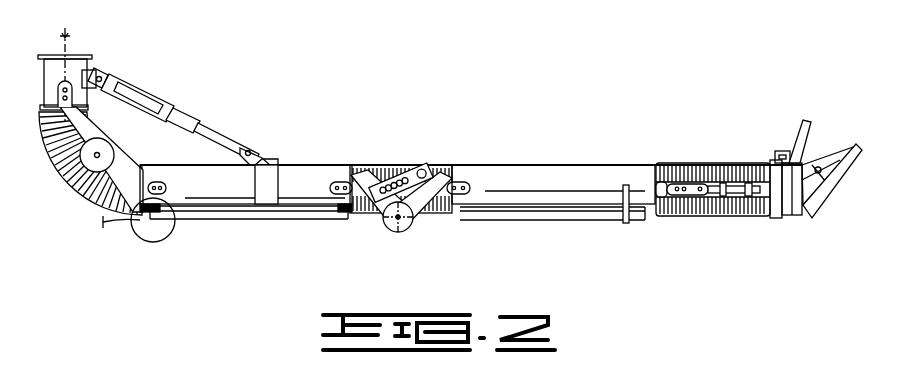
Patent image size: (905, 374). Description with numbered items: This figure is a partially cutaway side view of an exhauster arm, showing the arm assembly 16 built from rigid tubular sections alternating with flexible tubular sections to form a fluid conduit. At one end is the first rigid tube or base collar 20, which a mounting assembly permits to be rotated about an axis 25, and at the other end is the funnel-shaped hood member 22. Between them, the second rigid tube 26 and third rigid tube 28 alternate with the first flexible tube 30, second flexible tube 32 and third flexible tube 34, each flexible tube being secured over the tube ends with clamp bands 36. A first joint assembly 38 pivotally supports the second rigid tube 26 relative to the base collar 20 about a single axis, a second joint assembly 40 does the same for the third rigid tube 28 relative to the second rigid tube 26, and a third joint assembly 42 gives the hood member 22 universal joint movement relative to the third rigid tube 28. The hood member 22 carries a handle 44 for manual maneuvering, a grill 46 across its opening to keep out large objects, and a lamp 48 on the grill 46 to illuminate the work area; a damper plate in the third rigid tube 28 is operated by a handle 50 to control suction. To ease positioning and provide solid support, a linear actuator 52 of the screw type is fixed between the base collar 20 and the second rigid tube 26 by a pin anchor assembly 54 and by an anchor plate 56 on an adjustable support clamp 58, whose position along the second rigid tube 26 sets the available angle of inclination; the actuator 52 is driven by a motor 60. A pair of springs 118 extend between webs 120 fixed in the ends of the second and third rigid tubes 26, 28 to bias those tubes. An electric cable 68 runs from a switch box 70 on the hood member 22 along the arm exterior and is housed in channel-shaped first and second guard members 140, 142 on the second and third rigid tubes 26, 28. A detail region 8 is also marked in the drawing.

The detail area circle 8 is at (140, 240).
The arm assembly 16 is at (481, 104).
The base collar 20 is at (42, 62).
The hood member 22 is at (797, 222).
The axis 25 is at (67, 38).
The second rigid tube 26 is at (318, 172).
The third rigid tube 28 is at (518, 165).
The first flexible tube 30 is at (62, 178).
The second flexible tube 32 is at (370, 165).
The third flexible tube 34 is at (668, 164).
The clamp bands 36 is at (456, 167).
The first joint assembly 38 is at (100, 208).
The second joint assembly 40 is at (412, 231).
The third joint assembly 42 is at (692, 182).
The handle 44 is at (806, 120).
The grill 46 is at (822, 216).
The lamp 48 is at (826, 152).
The handle 50 is at (628, 224).
The linear actuator 52 is at (200, 118).
The pin anchor assembly 54 is at (104, 72).
The anchor plate 56 is at (263, 152).
The support clamp 58 is at (276, 192).
The motor 60 is at (148, 96).
The electric cable 68 is at (362, 210).
The switch box 70 is at (783, 152).
The springs 118 is at (392, 167).
The webs 120 is at (426, 168).
The first guard member 140 is at (246, 221).
The second guard member 142 is at (538, 221).